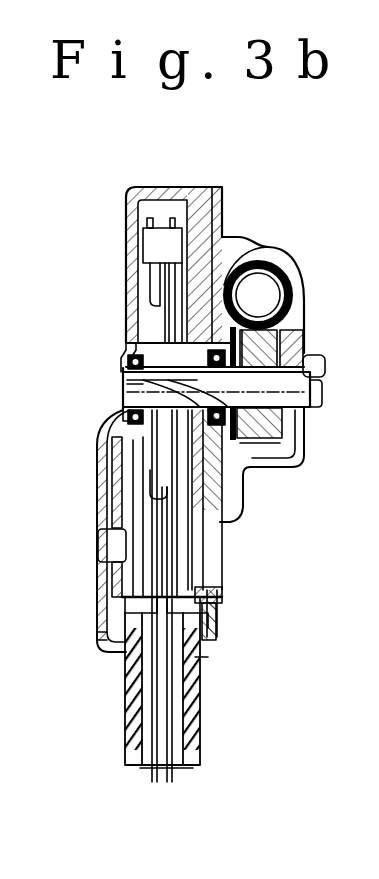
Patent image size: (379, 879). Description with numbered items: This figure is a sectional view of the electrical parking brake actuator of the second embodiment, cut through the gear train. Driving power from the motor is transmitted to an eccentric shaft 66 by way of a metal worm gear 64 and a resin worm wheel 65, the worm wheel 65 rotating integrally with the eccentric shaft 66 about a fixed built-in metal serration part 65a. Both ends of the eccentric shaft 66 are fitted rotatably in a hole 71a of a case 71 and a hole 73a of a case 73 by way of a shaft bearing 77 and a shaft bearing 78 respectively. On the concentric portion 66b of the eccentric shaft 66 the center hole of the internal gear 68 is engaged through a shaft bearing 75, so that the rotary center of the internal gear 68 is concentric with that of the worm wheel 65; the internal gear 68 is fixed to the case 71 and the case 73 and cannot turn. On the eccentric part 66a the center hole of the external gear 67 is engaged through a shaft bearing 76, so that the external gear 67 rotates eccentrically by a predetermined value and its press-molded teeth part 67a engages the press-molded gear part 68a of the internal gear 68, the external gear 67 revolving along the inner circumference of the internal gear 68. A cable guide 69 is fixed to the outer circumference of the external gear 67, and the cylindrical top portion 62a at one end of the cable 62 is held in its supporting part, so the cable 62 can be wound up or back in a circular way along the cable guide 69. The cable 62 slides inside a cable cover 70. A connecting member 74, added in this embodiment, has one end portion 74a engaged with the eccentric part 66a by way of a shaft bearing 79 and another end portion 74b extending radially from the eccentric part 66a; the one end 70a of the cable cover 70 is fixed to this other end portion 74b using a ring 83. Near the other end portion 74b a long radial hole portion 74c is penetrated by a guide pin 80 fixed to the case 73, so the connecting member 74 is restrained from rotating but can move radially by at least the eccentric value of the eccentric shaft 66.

The cable 62 is at (147, 781).
The top portion 62a is at (163, 247).
The worm gear 64 is at (268, 290).
The worm wheel 65 is at (288, 350).
The serration part 65a is at (296, 352).
The eccentric shaft 66 is at (297, 447).
The eccentric part 66a is at (122, 384).
The concentric portion 66b is at (312, 384).
The external gear 67 is at (252, 482).
The teeth part 67a is at (224, 484).
The internal gear 68 is at (215, 595).
The gear part 68a is at (220, 556).
The cable guide 69 is at (148, 282).
The cable cover 70 is at (147, 749).
The one end 70a is at (99, 605).
The case 71 is at (242, 249).
The hole 71a is at (312, 418).
The case 73 is at (128, 206).
The hole 73a is at (100, 444).
The connecting member 74 is at (100, 590).
The one end portion 74a is at (126, 342).
The other end portion 74b is at (213, 583).
The hole portion 74c is at (102, 532).
The shaft bearing 75 is at (262, 446).
The shaft bearing 76 is at (128, 366).
The shaft bearing 77 is at (324, 374).
The shaft bearing 78 is at (120, 414).
The shaft bearing 79 is at (124, 397).
The guide pin 80 is at (108, 550).
The ring 83 is at (222, 610).